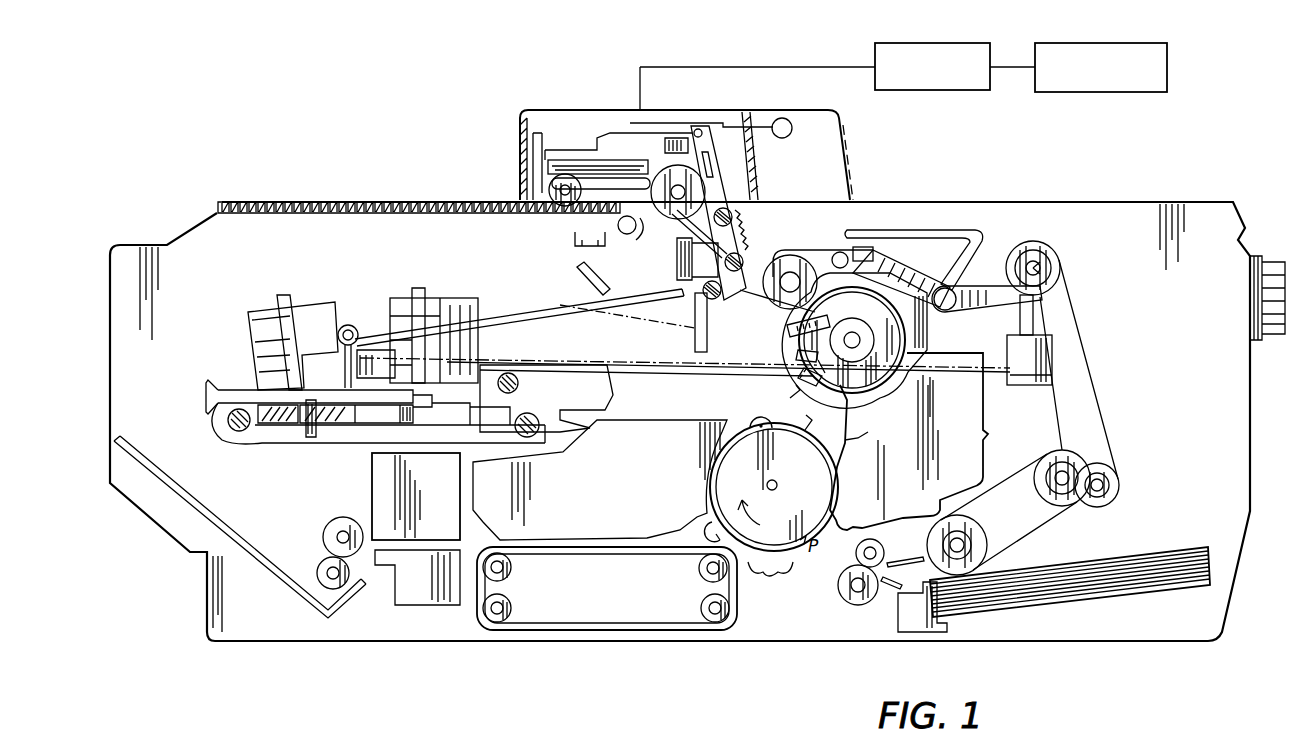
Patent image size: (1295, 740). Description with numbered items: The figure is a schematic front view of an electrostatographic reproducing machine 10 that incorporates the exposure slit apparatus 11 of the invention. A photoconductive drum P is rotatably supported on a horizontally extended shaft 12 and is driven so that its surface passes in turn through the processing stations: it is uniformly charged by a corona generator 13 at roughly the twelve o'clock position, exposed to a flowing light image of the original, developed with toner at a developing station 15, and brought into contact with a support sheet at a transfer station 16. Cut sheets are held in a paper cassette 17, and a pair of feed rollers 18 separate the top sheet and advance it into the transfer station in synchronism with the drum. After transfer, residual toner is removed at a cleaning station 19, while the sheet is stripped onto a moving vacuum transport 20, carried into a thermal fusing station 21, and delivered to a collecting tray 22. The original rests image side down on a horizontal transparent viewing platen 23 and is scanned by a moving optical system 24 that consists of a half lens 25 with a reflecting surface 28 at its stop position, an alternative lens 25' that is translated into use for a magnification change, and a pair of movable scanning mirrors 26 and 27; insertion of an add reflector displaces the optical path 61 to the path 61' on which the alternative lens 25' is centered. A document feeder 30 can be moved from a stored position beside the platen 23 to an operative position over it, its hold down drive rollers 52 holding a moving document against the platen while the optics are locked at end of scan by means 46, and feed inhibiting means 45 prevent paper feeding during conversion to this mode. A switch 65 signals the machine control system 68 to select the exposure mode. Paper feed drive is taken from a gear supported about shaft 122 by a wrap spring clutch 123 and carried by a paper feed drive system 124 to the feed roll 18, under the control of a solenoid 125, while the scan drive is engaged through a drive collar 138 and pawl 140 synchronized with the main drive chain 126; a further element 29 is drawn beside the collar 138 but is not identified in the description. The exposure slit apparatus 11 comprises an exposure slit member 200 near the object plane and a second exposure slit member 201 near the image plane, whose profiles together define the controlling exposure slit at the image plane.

The electrostatographic reproducing machine 10 is at (877, 203).
The exposure slit apparatus 11 is at (566, 244).
The horizontally extended shaft 12 is at (786, 480).
The corona generator 13 is at (754, 418).
The developing station 15 is at (984, 455).
The transfer station 16 is at (776, 572).
The paper cassette 17 is at (1052, 606).
The feed rollers 18 is at (982, 563).
The cleaning station 19 is at (688, 418).
The vacuum transport 20 is at (622, 562).
The thermal fusing station 21 is at (378, 482).
The collecting tray 22 is at (282, 558).
The viewing platen 23 is at (386, 214).
The moving optical system 24 is at (612, 270).
The lens 25 is at (293, 354).
The alternative lens 25' is at (417, 325).
The scanning mirror 26 is at (596, 296).
The half rate mirror 27 is at (707, 320).
The reflecting surface 28 is at (296, 322).
The pawl 29 is at (810, 358).
The document feeder 30 is at (610, 82).
The feed inhibiting means 45 is at (1078, 352).
The optics locking means 46 is at (818, 250).
The hold down drive rollers 52 is at (556, 226).
The optical path 61 is at (685, 387).
The displaced optical path 61' is at (728, 386).
The switch 65 is at (958, 43).
The machine control system 68 is at (1110, 43).
The shaft 122 is at (1056, 264).
The wrap spring clutch 123 is at (1056, 250).
The paper feed drive system 124 is at (1090, 411).
The solenoid 125 is at (1028, 368).
The main drive chain 126 is at (1000, 286).
The drive collar 138 is at (852, 340).
The pawl 140 is at (848, 316).
The exposure slit member 200 is at (578, 268).
The second exposure slit member 201 is at (867, 439).